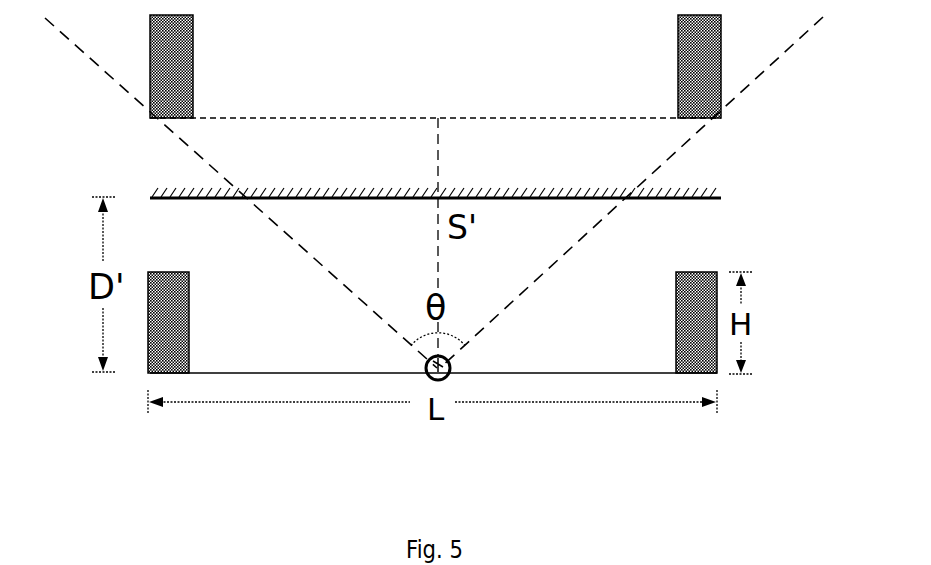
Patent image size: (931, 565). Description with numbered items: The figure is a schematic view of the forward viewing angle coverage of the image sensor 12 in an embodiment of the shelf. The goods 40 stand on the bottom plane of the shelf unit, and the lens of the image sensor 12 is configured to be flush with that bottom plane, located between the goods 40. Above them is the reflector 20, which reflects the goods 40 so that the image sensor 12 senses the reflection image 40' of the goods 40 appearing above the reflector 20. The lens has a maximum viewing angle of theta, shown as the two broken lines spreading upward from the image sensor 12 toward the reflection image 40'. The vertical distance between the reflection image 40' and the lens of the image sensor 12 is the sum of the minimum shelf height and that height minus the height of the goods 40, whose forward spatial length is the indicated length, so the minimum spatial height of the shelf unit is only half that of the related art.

The reflection image of the goods 40' is at (435, 66).
The reflector 20 is at (702, 196).
The goods 40 is at (408, 354).
The image sensor 12 is at (425, 364).